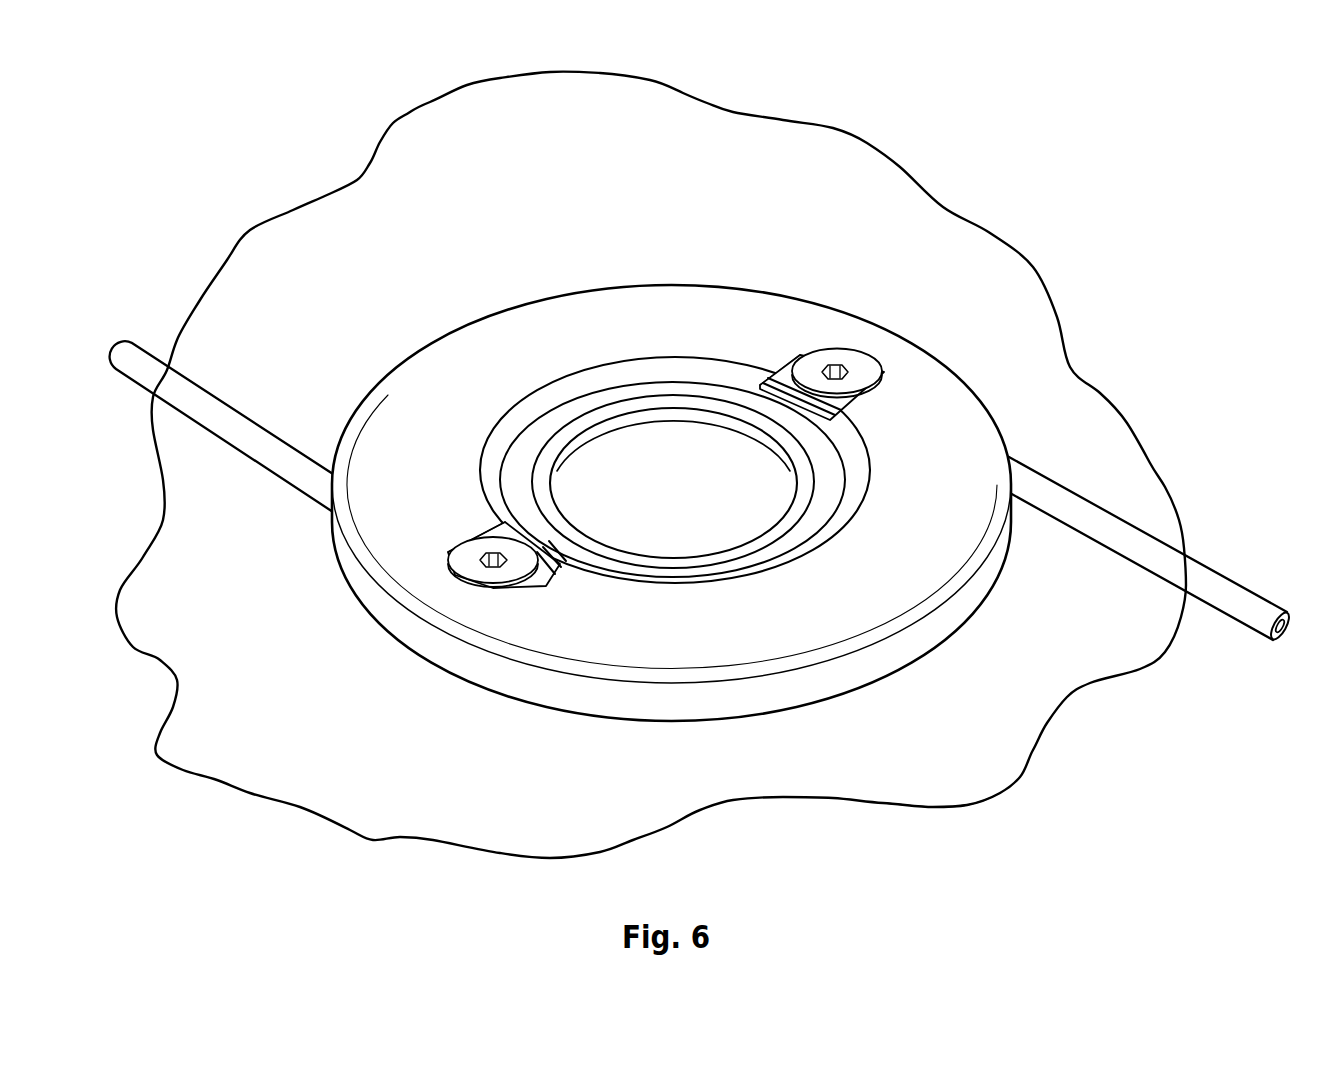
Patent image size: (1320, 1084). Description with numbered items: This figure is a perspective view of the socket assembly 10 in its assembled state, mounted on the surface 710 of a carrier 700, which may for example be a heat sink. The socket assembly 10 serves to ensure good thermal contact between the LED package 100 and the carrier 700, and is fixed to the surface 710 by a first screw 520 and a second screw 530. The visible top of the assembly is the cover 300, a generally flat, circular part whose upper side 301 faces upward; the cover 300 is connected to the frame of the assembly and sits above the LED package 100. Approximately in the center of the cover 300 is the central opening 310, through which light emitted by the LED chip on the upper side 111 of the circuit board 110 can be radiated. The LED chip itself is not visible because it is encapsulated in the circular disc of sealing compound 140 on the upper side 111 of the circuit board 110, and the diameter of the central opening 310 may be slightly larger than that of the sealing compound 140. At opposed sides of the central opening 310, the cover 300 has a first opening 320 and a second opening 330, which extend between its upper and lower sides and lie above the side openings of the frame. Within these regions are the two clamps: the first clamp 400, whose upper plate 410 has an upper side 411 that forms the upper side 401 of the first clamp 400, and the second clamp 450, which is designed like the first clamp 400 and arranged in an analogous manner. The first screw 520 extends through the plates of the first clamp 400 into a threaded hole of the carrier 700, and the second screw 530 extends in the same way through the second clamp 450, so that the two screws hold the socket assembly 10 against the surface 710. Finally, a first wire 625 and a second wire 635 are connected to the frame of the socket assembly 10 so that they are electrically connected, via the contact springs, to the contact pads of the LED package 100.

The socket assembly 10 is at (305, 77).
The LED package 100 is at (637, 413).
The circuit board 110 is at (637, 413).
The upper side of the circuit board 111 is at (560, 425).
The sealing compound 140 is at (680, 443).
The cover 300 is at (671, 462).
The upper side of the cover 301 is at (665, 305).
The central opening 310 is at (700, 392).
The first opening 320 is at (790, 376).
The second opening 330 is at (505, 522).
The first clamp 400 is at (1004, 312).
The upper side of the first clamp 401 is at (1004, 312).
The upper plate 410 is at (1004, 312).
The upper side of the upper plate 411 is at (836, 350).
The second clamp 450 is at (558, 570).
The first screw 520 is at (823, 400).
The second screw 530 is at (448, 552).
The first wire 625 is at (1233, 588).
The second wire 635 is at (240, 427).
The carrier 700 is at (713, 807).
The surface of the carrier 710 is at (918, 785).